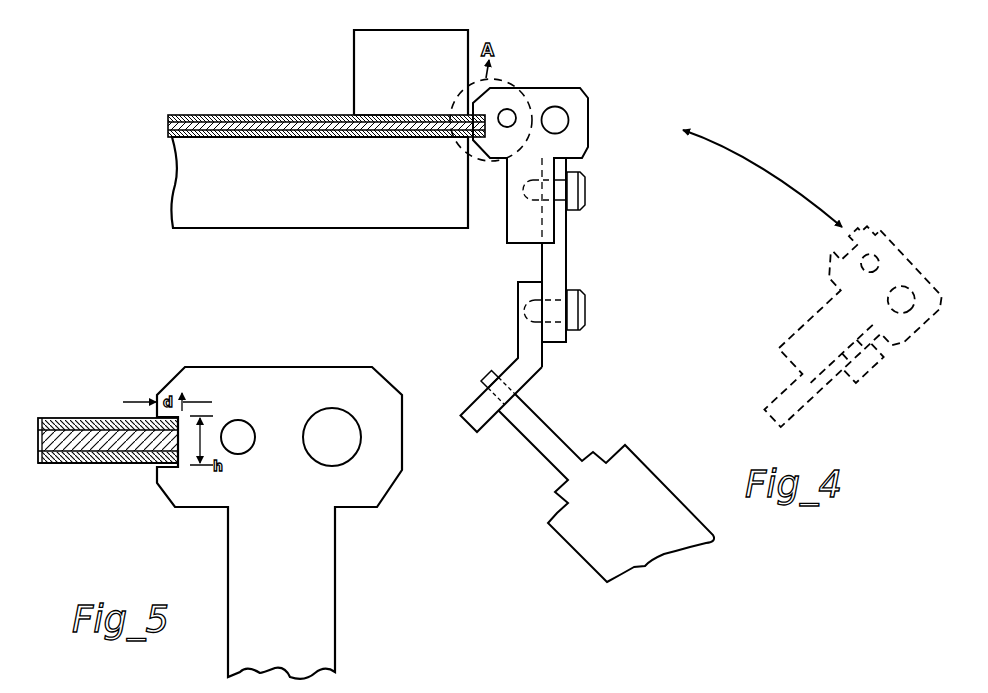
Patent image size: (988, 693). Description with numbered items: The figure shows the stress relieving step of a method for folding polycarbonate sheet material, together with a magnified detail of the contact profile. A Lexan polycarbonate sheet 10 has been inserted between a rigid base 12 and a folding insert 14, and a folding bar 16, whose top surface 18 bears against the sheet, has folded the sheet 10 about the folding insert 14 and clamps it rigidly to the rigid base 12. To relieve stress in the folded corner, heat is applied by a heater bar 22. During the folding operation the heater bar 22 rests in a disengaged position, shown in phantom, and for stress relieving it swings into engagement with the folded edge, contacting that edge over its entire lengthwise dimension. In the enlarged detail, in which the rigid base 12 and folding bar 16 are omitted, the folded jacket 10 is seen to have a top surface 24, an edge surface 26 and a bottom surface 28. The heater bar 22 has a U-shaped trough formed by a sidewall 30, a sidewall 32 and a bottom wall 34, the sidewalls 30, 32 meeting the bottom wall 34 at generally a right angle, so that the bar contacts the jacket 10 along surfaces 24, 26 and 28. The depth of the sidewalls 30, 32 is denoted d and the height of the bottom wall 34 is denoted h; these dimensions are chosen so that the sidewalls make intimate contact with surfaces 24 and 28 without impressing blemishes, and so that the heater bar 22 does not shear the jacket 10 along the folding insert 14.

In FIG. 4, the Lexan polycarbonate sheet 10 is at (286, 114).
In FIG. 5, the Lexan polycarbonate sheet 10 is at (52, 420).
In FIG. 4, the rigid base 12 is at (322, 196).
In FIG. 4, the folding insert 14 is at (223, 114).
In FIG. 5, the folding insert 14 is at (108, 466).
In FIG. 4, the folding bar 16 is at (426, 92).
In FIG. 4, the top surface 18 is at (358, 114).
In FIG. 5, the heater bar 22 is at (298, 499).
In FIG. 5, the top surface 24 is at (97, 416).
In FIG. 5, the edge surface 26 is at (150, 453).
In FIG. 5, the bottom surface 28 is at (95, 465).
In FIG. 5, the sidewall 30 is at (157, 397).
In FIG. 5, the sidewall 32 is at (167, 470).
In FIG. 5, the bottom wall 34 is at (192, 412).